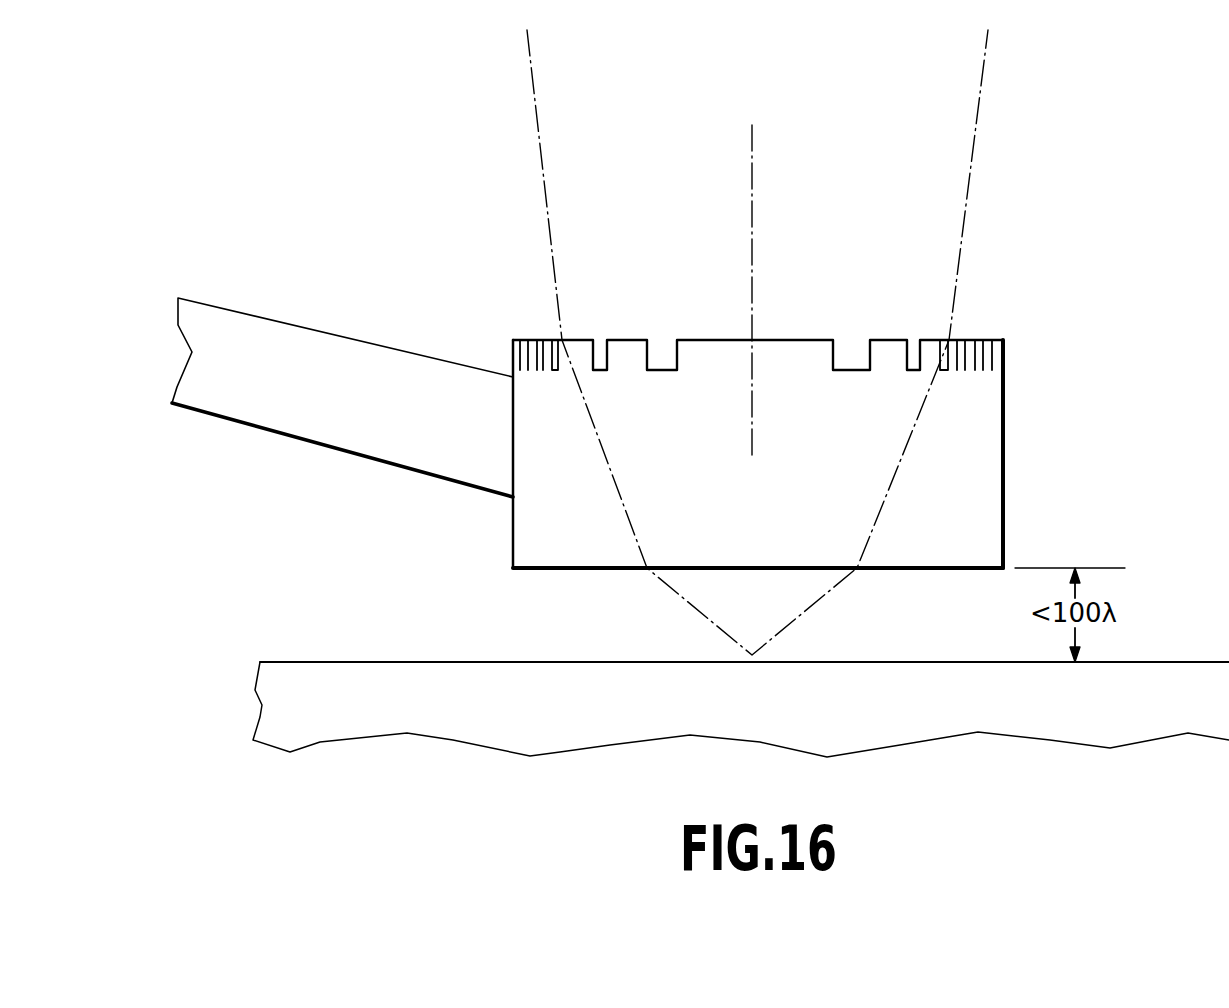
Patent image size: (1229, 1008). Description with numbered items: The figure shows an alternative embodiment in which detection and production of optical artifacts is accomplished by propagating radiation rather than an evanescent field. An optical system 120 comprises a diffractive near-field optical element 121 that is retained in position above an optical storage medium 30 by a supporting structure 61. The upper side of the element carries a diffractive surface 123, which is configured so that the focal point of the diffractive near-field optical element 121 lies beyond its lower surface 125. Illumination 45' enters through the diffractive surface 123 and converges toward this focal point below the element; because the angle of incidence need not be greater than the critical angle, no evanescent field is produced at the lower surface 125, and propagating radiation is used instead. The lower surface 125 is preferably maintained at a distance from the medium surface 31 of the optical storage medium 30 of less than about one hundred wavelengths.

The optical storage medium 30 is at (257, 697).
The medium surface 31 is at (440, 662).
The illumination 45' is at (707, 342).
The supporting structure 61 is at (329, 333).
The optical system 120 is at (835, 410).
The diffractive near-field optical element 121 is at (1005, 457).
The diffractive surface 123 is at (1031, 346).
The lower surface 125 is at (945, 570).